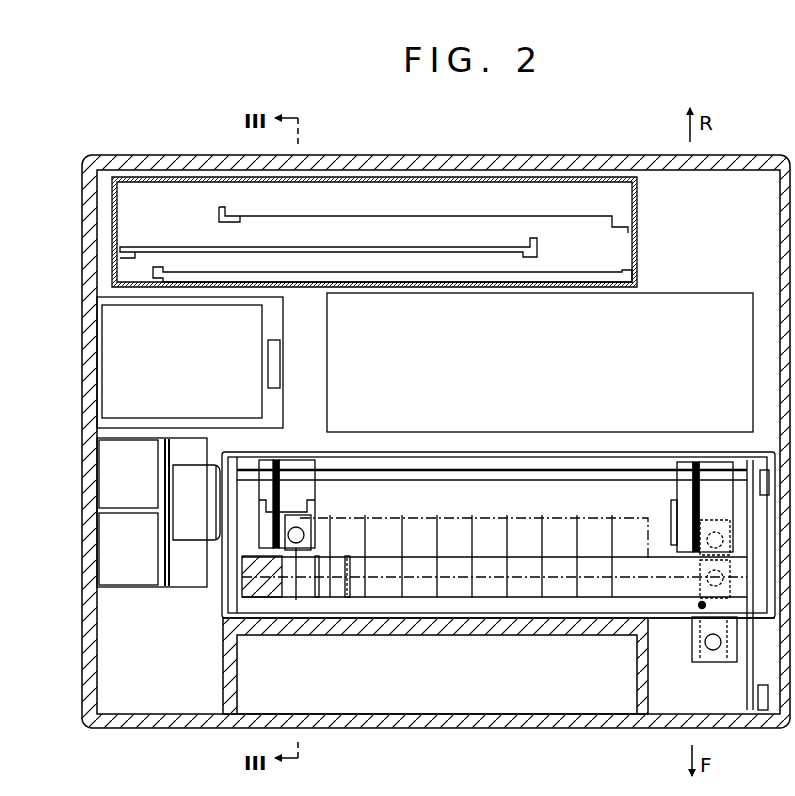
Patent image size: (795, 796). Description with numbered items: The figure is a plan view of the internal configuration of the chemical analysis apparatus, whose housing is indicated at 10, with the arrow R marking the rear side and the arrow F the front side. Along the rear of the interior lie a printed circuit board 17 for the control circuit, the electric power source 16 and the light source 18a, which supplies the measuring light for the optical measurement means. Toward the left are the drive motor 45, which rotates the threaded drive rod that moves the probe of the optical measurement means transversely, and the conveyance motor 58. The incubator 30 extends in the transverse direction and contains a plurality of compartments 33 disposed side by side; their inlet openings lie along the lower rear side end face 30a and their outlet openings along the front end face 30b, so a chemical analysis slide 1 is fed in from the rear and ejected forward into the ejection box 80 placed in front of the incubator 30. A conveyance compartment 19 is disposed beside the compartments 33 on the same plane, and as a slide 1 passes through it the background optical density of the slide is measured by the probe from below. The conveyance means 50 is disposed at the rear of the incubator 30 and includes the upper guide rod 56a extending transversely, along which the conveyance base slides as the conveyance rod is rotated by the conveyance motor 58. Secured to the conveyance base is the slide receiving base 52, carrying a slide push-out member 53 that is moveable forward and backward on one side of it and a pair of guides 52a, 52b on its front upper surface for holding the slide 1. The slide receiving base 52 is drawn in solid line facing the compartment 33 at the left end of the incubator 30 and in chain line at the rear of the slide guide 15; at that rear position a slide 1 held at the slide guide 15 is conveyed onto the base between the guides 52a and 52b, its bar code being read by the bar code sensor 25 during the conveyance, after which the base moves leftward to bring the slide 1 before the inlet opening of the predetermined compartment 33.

The housing frame 10 is at (88, 582).
The printed circuit board 17 is at (382, 242).
The light source 18a is at (197, 368).
The electric power source 16 is at (541, 370).
The conveyance motor 58 is at (136, 489).
The drive motor 45 is at (136, 556).
The guide 52b is at (262, 494).
The slide push-out member 53 is at (268, 460).
The slide receiving base 52 is at (300, 465).
The conveyance means 50 is at (340, 468).
The upper guide rod 56a is at (468, 478).
The guide 52a is at (308, 497).
The chemical analysis slide 1 is at (330, 555).
The lower rear side end face 30a is at (360, 595).
The incubator 30 is at (490, 516).
The conveyance compartment 19 is at (700, 579).
The front end face 30b is at (255, 597).
The compartments 33 is at (347, 590).
The ejection box 80 is at (497, 696).
The bar code sensor 25 is at (698, 608).
The slide guide 15 is at (700, 655).